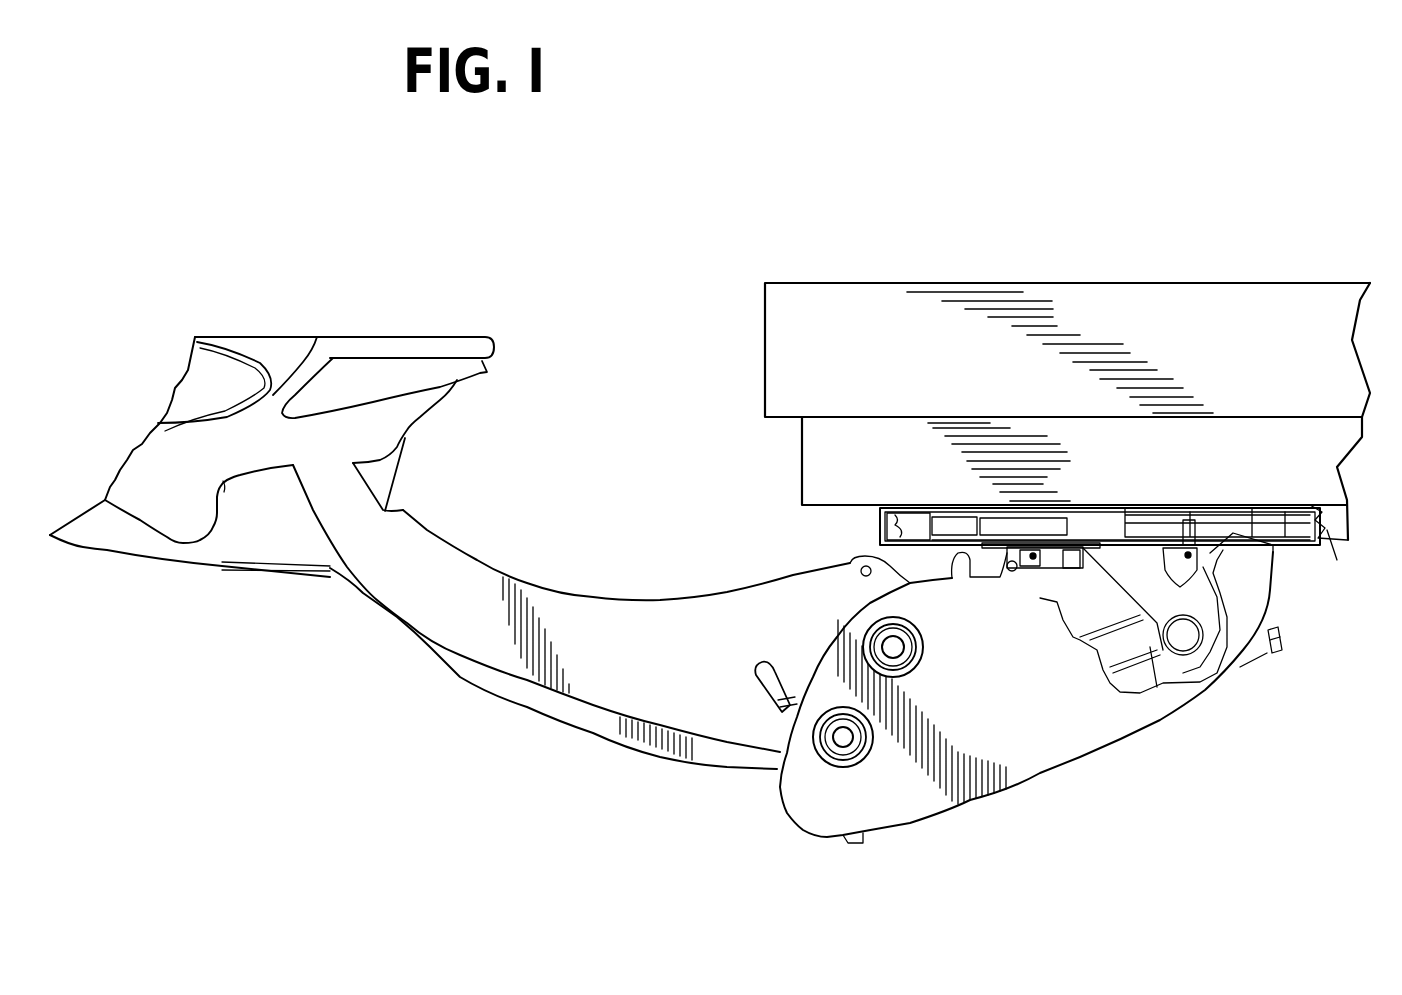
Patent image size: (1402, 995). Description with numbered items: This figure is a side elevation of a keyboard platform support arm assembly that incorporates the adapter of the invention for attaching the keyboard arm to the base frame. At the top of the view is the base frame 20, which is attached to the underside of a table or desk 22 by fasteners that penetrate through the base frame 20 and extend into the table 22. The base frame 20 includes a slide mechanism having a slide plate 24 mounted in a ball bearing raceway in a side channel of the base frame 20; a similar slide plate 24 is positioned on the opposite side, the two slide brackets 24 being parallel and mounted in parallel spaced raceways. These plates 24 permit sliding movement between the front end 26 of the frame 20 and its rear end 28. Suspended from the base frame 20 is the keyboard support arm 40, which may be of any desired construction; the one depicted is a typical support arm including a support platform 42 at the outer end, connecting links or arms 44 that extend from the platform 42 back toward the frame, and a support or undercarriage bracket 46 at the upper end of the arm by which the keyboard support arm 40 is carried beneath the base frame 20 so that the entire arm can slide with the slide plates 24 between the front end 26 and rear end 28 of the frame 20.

The base frame 20 is at (908, 435).
The table or desk 22 is at (1040, 290).
The slide plate 24 is at (1147, 523).
The front end 26 is at (880, 523).
The rear end 28 is at (1337, 548).
The keyboard support arm 40 is at (596, 690).
The support platform 42 is at (432, 333).
The connecting links or arms 44 is at (460, 585).
The support or undercarriage bracket 46 is at (953, 793).